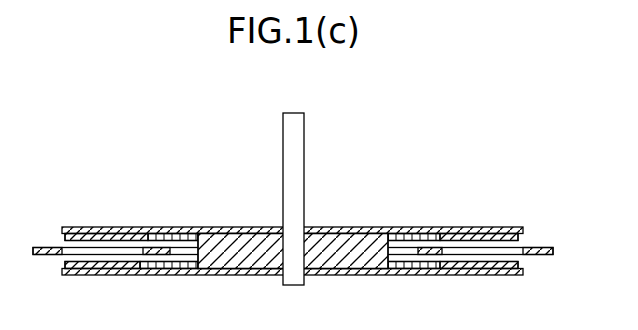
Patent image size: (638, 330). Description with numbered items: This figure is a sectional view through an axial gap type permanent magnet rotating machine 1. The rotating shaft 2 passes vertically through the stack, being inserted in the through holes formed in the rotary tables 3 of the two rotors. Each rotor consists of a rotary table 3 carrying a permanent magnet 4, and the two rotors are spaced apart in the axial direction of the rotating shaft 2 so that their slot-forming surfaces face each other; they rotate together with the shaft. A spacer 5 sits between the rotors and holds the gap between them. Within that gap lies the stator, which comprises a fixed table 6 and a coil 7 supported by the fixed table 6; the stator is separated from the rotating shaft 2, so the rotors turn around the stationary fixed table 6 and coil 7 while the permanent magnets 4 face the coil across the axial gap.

The axial gap type permanent magnet rotating machine 1 is at (405, 145).
The rotating shaft 2 is at (293, 160).
The rotary table 3 is at (478, 228).
The permanent magnet 4 is at (508, 237).
The spacer 5 is at (248, 238).
The fixed table 6 is at (544, 252).
The coil 7 is at (148, 250).